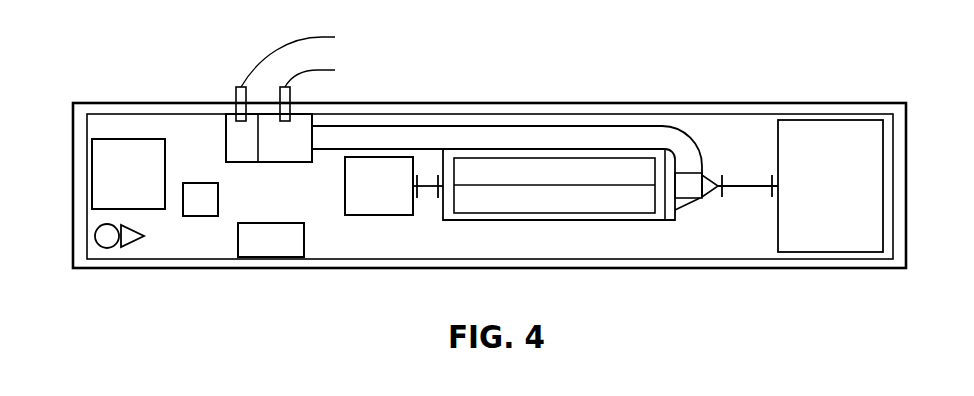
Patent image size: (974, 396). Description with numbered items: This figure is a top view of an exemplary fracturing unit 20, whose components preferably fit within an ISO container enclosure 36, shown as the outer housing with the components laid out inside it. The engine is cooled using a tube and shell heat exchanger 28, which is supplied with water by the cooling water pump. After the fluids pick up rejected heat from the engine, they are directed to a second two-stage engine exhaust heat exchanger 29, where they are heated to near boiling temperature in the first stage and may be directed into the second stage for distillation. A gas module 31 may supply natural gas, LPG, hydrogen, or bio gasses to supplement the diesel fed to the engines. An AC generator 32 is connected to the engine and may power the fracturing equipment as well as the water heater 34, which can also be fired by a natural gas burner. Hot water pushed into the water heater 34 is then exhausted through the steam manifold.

The fracturing unit 20 is at (899, 88).
The tube and shell heat exchanger 28 is at (273, 238).
The 2-stage engine exhaust heat exchanger 29 is at (268, 140).
The gas module 31 is at (203, 208).
The AC generator 32 is at (399, 208).
The water heater 34 is at (131, 162).
The ISO container enclosure 36 is at (659, 256).